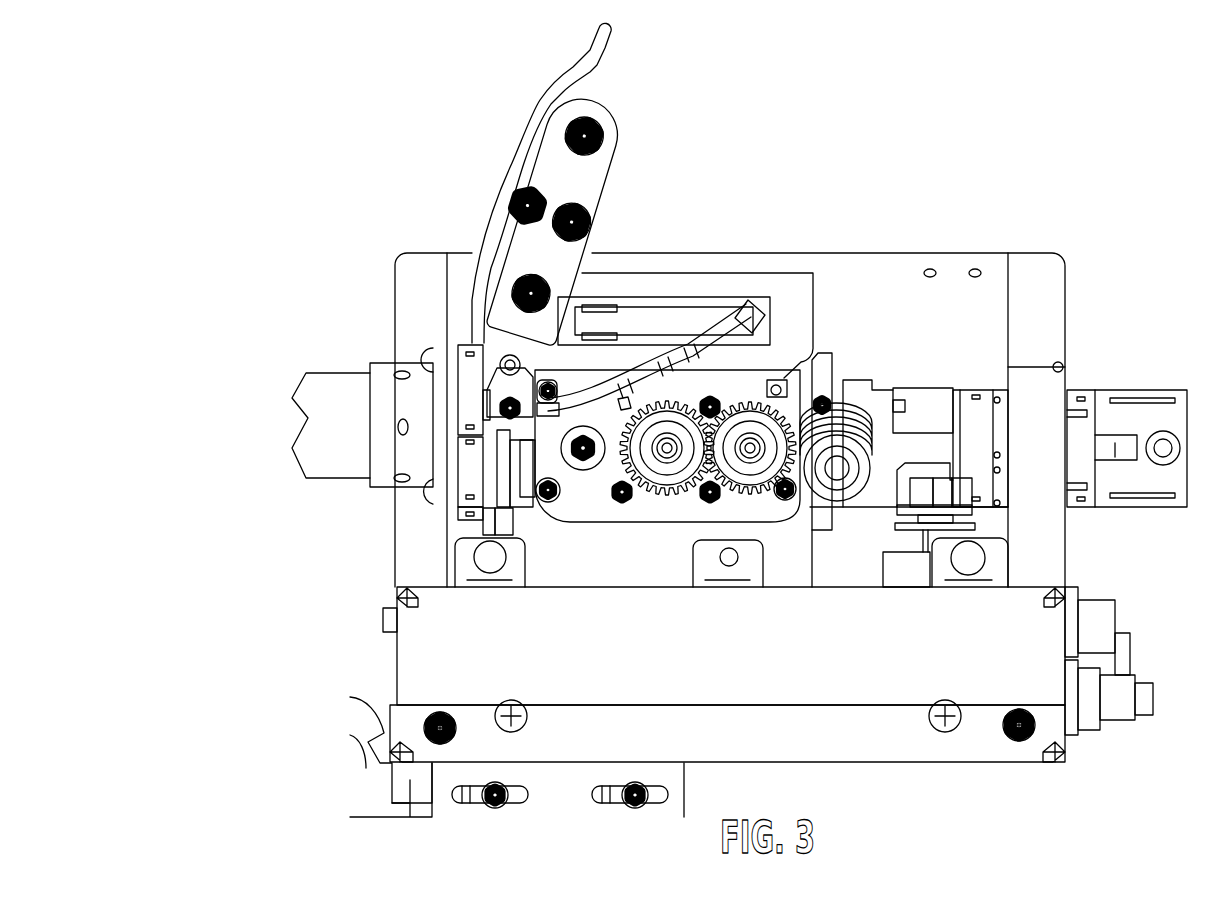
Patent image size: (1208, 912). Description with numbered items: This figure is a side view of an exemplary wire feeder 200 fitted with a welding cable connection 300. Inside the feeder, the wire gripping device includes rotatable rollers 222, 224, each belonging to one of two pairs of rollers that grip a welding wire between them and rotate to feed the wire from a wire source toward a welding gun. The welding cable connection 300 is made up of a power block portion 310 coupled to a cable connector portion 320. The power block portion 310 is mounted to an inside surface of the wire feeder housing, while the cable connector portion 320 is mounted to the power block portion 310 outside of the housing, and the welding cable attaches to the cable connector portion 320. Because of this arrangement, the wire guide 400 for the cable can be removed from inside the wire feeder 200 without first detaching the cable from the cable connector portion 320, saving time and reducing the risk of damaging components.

The wire feeder 200 is at (860, 68).
The rotatable roller 222 is at (668, 450).
The rotatable roller 224 is at (752, 450).
The welding cable connection 300 is at (367, 363).
The power block portion 310 is at (472, 473).
The cable connector portion 320 is at (330, 410).
The wire guide 400 is at (765, 308).